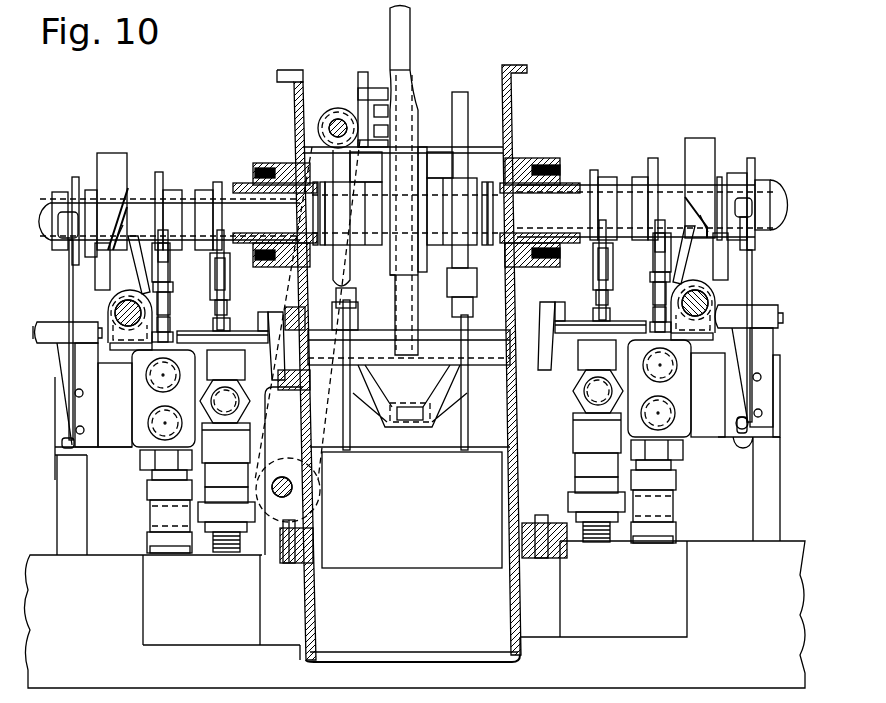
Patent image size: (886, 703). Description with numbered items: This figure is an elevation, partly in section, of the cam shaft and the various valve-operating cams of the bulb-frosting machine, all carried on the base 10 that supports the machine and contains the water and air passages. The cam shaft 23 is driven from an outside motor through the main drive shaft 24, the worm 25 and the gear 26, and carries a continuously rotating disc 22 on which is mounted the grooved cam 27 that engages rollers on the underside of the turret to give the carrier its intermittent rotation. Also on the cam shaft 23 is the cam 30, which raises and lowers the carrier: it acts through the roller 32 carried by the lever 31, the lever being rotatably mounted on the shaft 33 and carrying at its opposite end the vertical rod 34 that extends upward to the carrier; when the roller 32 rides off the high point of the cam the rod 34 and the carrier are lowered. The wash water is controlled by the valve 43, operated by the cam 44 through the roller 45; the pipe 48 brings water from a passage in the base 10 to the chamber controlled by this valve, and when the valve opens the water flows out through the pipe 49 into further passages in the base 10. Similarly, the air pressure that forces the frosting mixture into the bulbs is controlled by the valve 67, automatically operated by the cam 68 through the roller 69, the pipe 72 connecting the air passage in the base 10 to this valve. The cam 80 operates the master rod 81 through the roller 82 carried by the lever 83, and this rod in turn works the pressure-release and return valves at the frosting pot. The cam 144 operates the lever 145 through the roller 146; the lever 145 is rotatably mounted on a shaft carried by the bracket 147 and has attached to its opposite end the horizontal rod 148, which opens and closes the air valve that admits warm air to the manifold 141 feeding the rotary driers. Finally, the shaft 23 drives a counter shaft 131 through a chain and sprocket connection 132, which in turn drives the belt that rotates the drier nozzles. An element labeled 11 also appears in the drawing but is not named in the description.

The base 10 is at (100, 552).
The housing 11 is at (516, 495).
The continuously rotating disc 22 is at (414, 112).
The cam shaft 23 is at (265, 207).
The main drive shaft 24 is at (340, 120).
The worm 25 is at (330, 122).
The gear 26 is at (350, 280).
The grooved cam 27 is at (365, 72).
The cam 30 is at (460, 92).
The lever 31 is at (448, 392).
The roller 32 is at (462, 282).
The shaft 33 is at (500, 370).
The vertical rod 34 is at (408, 40).
The valve 43 is at (250, 331).
The cam 44 is at (220, 182).
The roller 45 is at (218, 290).
The pipe 48 is at (240, 402).
The pipe 49 is at (215, 550).
The valve 67 is at (136, 410).
The cam 68 is at (158, 172).
The roller 69 is at (163, 262).
The pipe 72 is at (150, 438).
The cam 80 is at (108, 152).
The master rod 81 is at (122, 312).
The roller 82 is at (127, 196).
The lever 83 is at (411, 254).
The counter shaft 131 is at (300, 488).
The chain and sprocket connection 132 is at (297, 147).
The manifold 141 is at (780, 352).
The cam 144 is at (75, 177).
The lever 145 is at (69, 282).
The roller 146 is at (76, 220).
The bracket 147 is at (60, 370).
The horizontal rod 148 is at (60, 442).